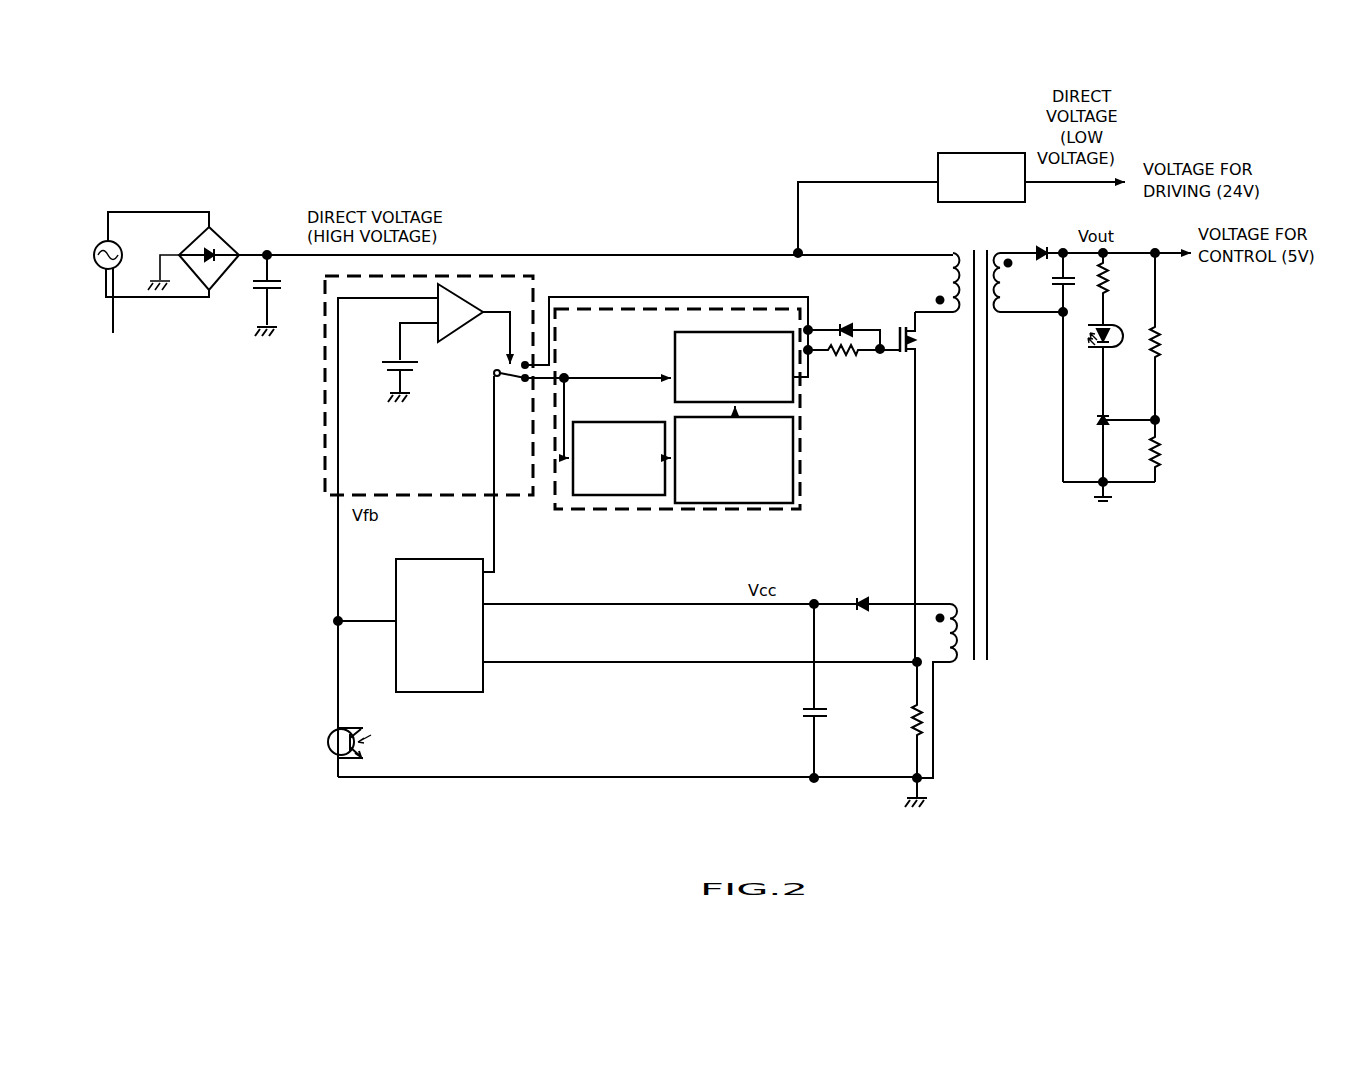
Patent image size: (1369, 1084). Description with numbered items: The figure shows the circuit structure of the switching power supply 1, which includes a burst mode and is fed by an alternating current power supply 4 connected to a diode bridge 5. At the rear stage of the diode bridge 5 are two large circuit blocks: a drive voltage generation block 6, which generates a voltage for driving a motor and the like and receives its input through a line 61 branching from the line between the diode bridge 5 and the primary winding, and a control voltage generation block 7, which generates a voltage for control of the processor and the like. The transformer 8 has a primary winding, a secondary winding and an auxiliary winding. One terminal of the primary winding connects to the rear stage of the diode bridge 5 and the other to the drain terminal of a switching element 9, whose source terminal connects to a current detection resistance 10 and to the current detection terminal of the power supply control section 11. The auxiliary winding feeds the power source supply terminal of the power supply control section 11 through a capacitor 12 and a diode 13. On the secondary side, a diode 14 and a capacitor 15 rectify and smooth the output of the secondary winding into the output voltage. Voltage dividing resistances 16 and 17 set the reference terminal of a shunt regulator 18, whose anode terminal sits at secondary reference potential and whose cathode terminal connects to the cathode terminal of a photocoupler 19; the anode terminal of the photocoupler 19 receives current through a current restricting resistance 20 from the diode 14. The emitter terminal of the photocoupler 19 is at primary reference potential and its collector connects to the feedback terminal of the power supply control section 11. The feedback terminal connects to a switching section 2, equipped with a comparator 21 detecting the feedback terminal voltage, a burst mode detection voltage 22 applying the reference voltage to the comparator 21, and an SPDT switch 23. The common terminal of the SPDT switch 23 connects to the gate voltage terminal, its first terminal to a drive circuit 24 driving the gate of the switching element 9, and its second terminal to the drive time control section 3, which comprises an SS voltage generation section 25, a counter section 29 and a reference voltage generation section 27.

The switching power supply 1 is at (322, 182).
The switching section 2 is at (429, 385).
The drive time control section 3 is at (677, 409).
The alternating current power supply 4 is at (151, 288).
The diode bridge 5 is at (596, 283).
The drive voltage generation block 6 is at (760, 202).
The control voltage generation block 7 is at (1091, 577).
The transformer 8 is at (989, 501).
The switching element 9 is at (914, 478).
The current detection resistance 10 is at (906, 734).
The power supply control section 11 is at (627, 615).
The capacitor 12 is at (805, 691).
The diode 13 is at (903, 589).
The diode 14 is at (1096, 243).
The capacitor 15 is at (1053, 367).
The resistance 16 is at (1174, 336).
The resistance 17 is at (1174, 451).
The shunt regulator 18 is at (1117, 408).
The photocoupler 19 is at (725, 541).
The resistance 20 is at (1122, 289).
The comparator 21 is at (474, 322).
The burst mode detection voltage 22 is at (396, 362).
The SPDT switch 23 is at (637, 434).
The drive circuit 24 is at (852, 324).
The SS voltage generation section 25 is at (734, 367).
The reference voltage generation section 27 is at (734, 460).
The counter section 29 is at (619, 458).
The line 61 is at (798, 223).